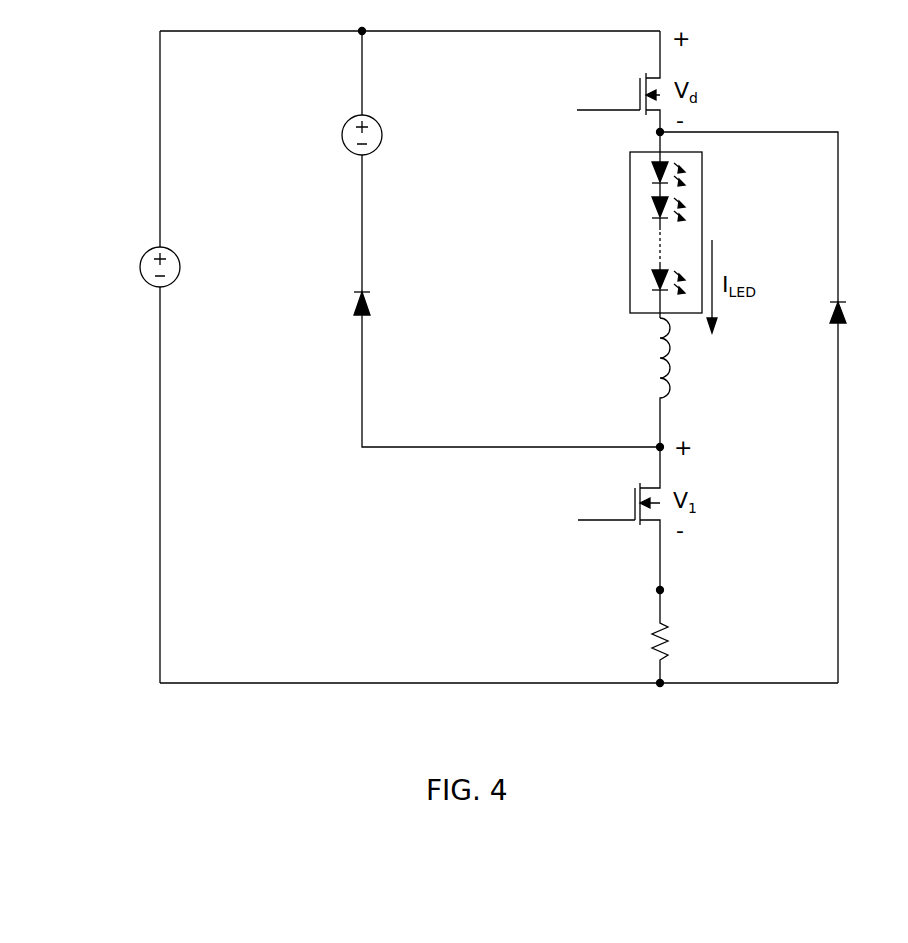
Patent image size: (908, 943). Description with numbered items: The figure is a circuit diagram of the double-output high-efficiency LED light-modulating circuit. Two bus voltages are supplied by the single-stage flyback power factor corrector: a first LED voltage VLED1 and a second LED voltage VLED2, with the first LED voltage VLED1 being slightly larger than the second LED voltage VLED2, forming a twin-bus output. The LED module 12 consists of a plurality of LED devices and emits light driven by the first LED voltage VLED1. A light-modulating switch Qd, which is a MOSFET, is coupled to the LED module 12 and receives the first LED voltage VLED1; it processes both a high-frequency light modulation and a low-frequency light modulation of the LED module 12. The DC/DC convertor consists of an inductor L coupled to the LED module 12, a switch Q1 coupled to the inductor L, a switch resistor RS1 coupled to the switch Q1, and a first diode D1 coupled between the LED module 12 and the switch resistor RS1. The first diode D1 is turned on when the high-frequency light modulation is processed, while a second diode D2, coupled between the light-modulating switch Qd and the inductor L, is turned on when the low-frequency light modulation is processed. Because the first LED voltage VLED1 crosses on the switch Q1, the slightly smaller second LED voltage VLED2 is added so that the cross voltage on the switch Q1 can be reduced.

The LED module 12 is at (632, 277).
The first diode D1 is at (854, 318).
The second diode D2 is at (381, 304).
The switch Q1 is at (619, 518).
The light-modulating switch Qd is at (618, 81).
The inductor L is at (678, 382).
The switch resistor RS1 is at (679, 636).
The first LED voltage VLED1 is at (129, 267).
The second LED voltage VLED2 is at (331, 135).